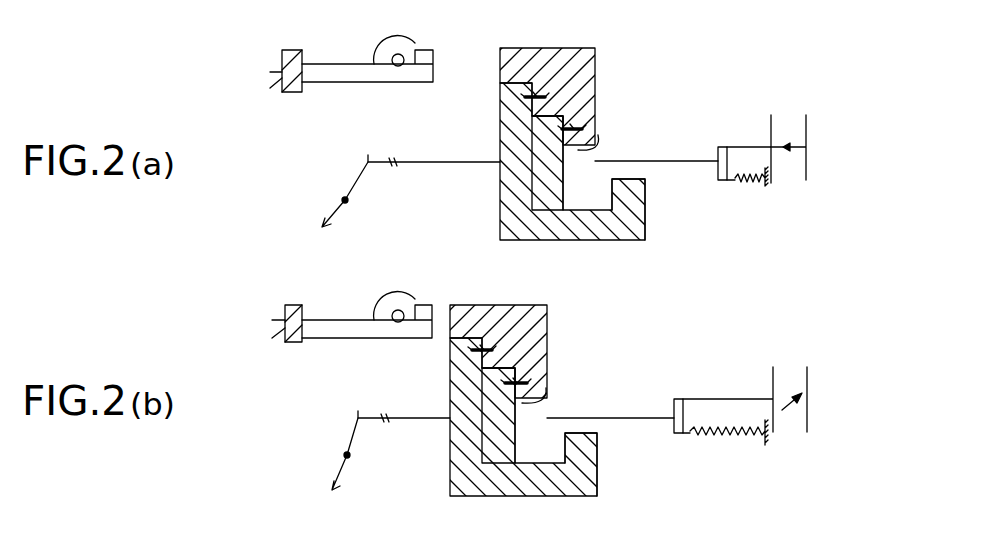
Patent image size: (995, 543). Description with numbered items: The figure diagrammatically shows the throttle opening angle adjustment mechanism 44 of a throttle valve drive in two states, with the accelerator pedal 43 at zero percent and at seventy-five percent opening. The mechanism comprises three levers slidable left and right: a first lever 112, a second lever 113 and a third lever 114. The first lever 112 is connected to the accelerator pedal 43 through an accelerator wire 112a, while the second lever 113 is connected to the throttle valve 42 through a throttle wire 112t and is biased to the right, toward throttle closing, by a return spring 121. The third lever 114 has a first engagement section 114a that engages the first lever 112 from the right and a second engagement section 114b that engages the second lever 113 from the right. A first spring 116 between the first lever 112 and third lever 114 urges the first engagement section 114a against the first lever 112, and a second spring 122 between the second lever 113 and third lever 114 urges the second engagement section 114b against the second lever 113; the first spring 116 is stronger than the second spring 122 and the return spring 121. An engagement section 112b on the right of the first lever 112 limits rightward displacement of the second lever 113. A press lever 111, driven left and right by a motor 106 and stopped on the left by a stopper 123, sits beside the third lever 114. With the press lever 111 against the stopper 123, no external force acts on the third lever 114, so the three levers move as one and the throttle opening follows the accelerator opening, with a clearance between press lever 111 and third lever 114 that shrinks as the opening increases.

In FIG. 2A, the throttle valve 42 is at (806, 130).
In FIG. 2B, the throttle valve 42 is at (807, 397).
In FIG. 2A, the accelerator pedal 43 is at (322, 220).
In FIG. 2B, the accelerator pedal 43 is at (330, 482).
In FIG. 2A, the throttle opening angle adjustment mechanism 44 is at (688, 52).
In FIG. 2B, the throttle opening angle adjustment mechanism 44 is at (655, 345).
In FIG. 2A, the motor 106 is at (398, 38).
In FIG. 2B, the motor 106 is at (398, 300).
In FIG. 2A, the press lever 111 is at (333, 82).
In FIG. 2B, the press lever 111 is at (337, 338).
In FIG. 2A, the first lever 112 is at (551, 240).
In FIG. 2B, the first lever 112 is at (460, 496).
In FIG. 2A, the accelerator wire 112a is at (422, 160).
In FIG. 2B, the accelerator wire 112a is at (415, 418).
In FIG. 2A, the engagement section 112b is at (645, 195).
In FIG. 2B, the engagement section 112b is at (597, 460).
In FIG. 2A, the throttle wire 112t is at (662, 160).
In FIG. 2B, the throttle wire 112t is at (615, 418).
In FIG. 2A, the second lever 113 is at (563, 204).
In FIG. 2B, the second lever 113 is at (505, 463).
In FIG. 2A, the third lever 114 is at (598, 48).
In FIG. 2B, the third lever 114 is at (540, 335).
In FIG. 2A, the first engagement section 114a is at (530, 97).
In FIG. 2B, the first engagement section 114a is at (472, 350).
In FIG. 2A, the second engagement section 114b is at (582, 132).
In FIG. 2B, the second engagement section 114b is at (522, 395).
In FIG. 2A, the first spring 116 is at (546, 92).
In FIG. 2B, the first spring 116 is at (476, 350).
In FIG. 2A, the return spring 121 is at (745, 183).
In FIG. 2B, the return spring 121 is at (732, 432).
In FIG. 2A, the second spring 122 is at (590, 118).
In FIG. 2B, the second spring 122 is at (520, 373).
In FIG. 2A, the stopper 123 is at (286, 92).
In FIG. 2B, the stopper 123 is at (286, 342).